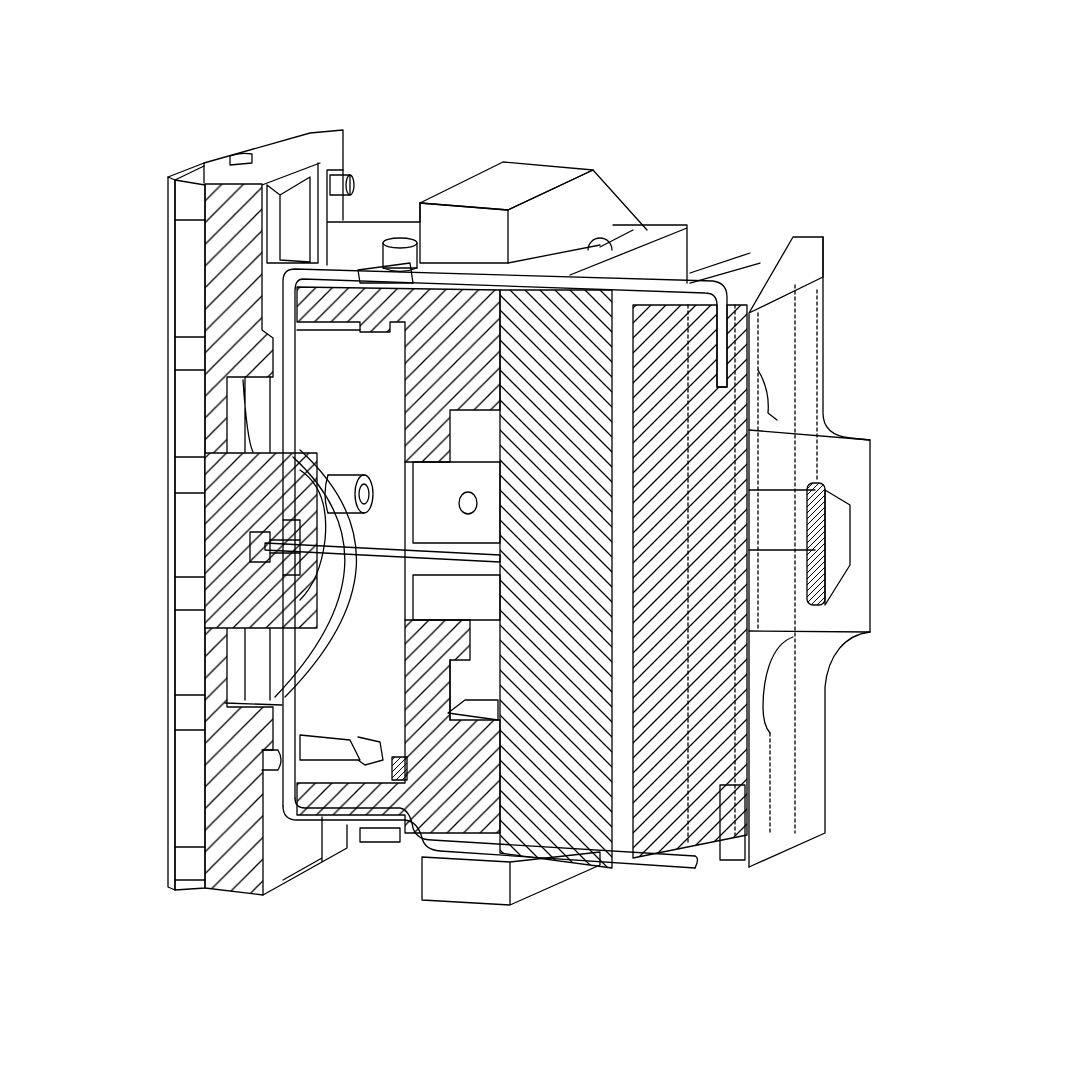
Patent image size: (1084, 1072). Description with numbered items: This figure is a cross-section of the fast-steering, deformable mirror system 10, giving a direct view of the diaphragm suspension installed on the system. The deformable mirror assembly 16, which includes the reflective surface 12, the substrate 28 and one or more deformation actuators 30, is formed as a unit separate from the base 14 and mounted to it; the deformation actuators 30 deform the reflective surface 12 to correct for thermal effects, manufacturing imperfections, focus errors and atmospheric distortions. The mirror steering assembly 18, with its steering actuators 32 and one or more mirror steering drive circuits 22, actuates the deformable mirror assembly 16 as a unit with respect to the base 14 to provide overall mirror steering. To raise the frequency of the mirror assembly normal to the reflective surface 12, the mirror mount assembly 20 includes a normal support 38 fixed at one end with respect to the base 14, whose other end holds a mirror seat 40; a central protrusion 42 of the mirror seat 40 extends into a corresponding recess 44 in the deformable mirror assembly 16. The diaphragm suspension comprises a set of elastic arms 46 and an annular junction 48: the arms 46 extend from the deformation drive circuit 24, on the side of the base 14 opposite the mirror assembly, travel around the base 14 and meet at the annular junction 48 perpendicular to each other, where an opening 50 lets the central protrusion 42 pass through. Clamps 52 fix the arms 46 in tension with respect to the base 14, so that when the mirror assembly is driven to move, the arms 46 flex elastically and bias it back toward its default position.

The fast-steering, deformable mirror system 10 is at (850, 78).
The reflective surface 12 is at (170, 415).
The base 14 is at (553, 160).
The deformable mirror assembly 16 is at (230, 78).
The mirror steering assembly 18 is at (377, 185).
The mirror mount assembly 20 is at (282, 560).
The mirror steering drive circuits 22 is at (595, 323).
The deformation drive circuit 24 is at (786, 312).
The substrate 28 is at (240, 200).
The deformation actuators 30 is at (183, 207).
The steering actuators 32 is at (380, 362).
The normal support 38 is at (393, 565).
The mirror seat 40 is at (307, 602).
The central protrusion 42 is at (262, 540).
The recess 44 is at (245, 523).
The elastic arms 46 is at (568, 287).
The annular junction 48 is at (296, 507).
The opening 50 is at (283, 535).
The clamps 52 is at (414, 282).